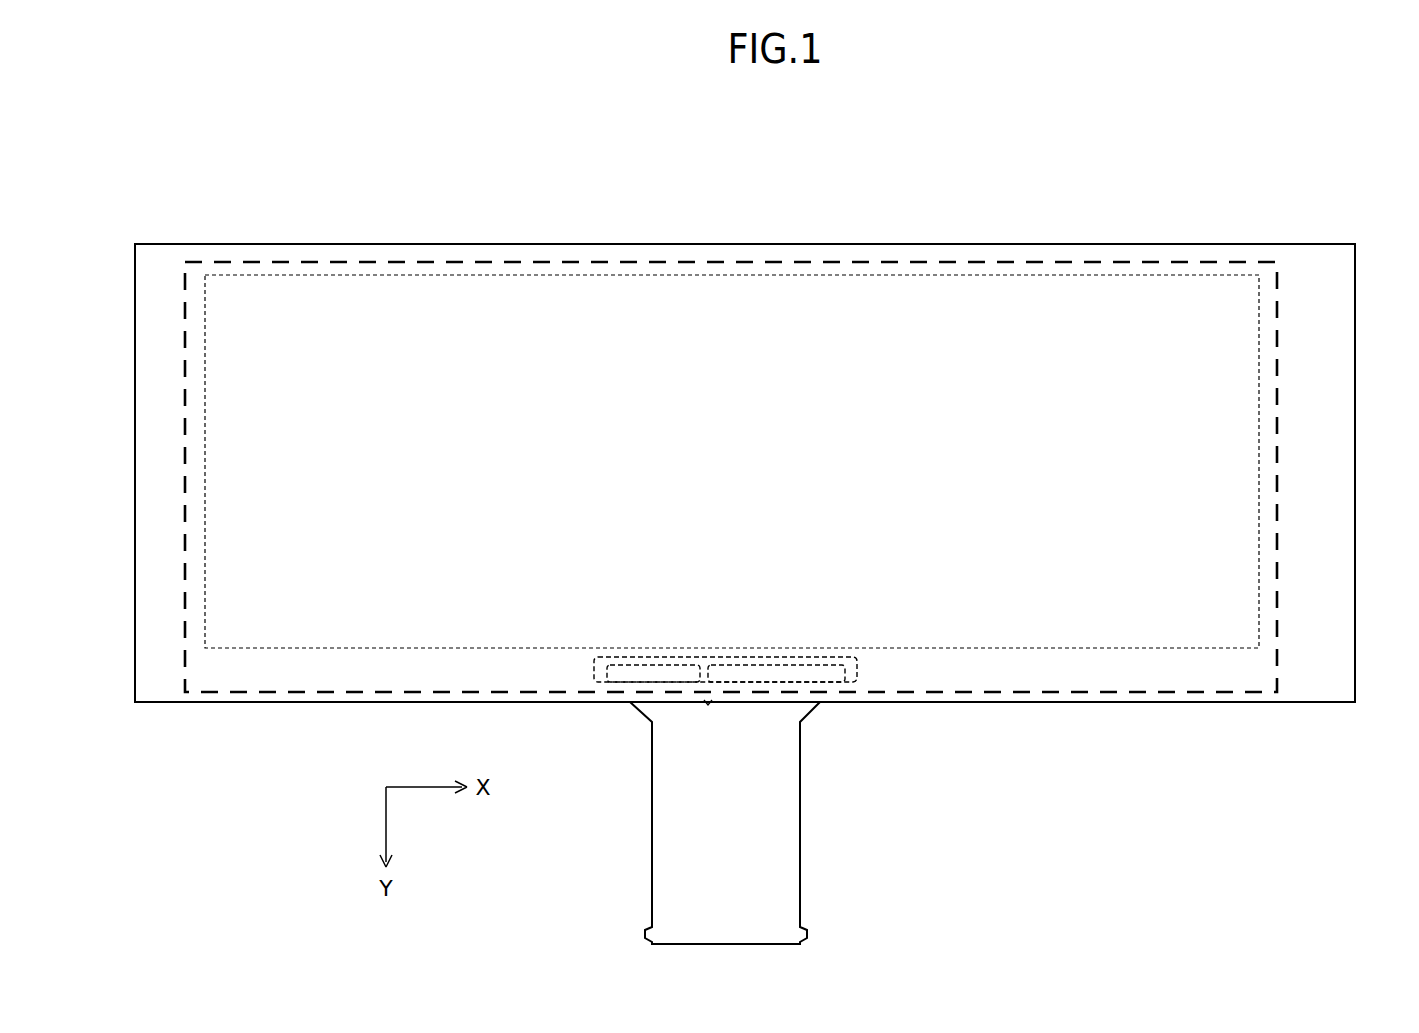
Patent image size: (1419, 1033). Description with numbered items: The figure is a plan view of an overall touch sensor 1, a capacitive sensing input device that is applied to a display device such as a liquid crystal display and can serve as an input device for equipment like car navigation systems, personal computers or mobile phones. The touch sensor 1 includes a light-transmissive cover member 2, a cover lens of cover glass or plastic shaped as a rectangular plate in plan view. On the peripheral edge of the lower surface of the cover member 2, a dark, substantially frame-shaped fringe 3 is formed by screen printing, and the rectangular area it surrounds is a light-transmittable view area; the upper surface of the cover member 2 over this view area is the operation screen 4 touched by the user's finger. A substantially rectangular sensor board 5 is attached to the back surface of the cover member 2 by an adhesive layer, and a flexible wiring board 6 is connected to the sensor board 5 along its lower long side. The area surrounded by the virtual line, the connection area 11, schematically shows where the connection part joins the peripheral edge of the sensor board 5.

The touch sensor 1 is at (1143, 212).
The cover member 2 is at (862, 243).
The fringe 3 is at (1118, 648).
The operation screen 4 is at (1124, 388).
The sensor board 5 is at (303, 694).
The flexible wiring board 6 is at (800, 838).
The connection area 11 is at (858, 668).